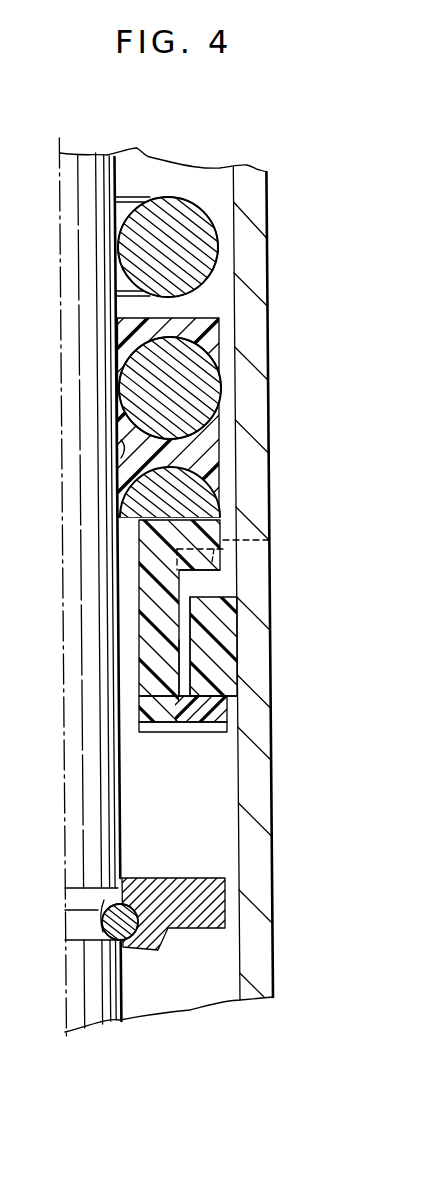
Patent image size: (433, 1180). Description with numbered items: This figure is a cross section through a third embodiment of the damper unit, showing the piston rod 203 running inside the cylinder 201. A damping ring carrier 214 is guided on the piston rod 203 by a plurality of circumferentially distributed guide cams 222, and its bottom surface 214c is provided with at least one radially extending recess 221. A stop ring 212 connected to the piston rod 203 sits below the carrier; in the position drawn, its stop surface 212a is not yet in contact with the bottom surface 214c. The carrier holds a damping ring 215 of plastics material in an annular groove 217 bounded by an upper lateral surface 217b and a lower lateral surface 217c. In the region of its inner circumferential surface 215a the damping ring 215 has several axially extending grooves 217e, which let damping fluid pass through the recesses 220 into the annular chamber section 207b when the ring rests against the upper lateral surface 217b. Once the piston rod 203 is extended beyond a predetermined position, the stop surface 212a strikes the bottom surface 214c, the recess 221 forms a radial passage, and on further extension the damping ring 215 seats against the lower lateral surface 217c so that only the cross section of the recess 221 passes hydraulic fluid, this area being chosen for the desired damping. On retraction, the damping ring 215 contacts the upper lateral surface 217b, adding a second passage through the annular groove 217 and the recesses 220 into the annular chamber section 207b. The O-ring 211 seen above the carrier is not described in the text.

The cylinder 201 is at (249, 200).
The piston rod 203 is at (83, 160).
The annular chamber section 207b is at (213, 293).
The O-ring seal 211 is at (187, 207).
The damping ring carrier 214 is at (210, 440).
The guide cams 222 is at (123, 447).
The recesses 220 is at (270, 540).
The upper lateral surface of the annular groove 217b is at (210, 577).
The annular groove 217 is at (203, 587).
The axially extending grooves 217e is at (187, 625).
The damping ring 215 is at (223, 655).
The inner circumferential surface 215a is at (188, 652).
The radially extending recess 221 is at (217, 725).
The lower lateral surface of the annular groove 217c is at (176, 690).
The bottom surface of the damping ring carrier 214c is at (195, 733).
The stop surface 212a is at (166, 876).
The stop ring 212 is at (225, 895).